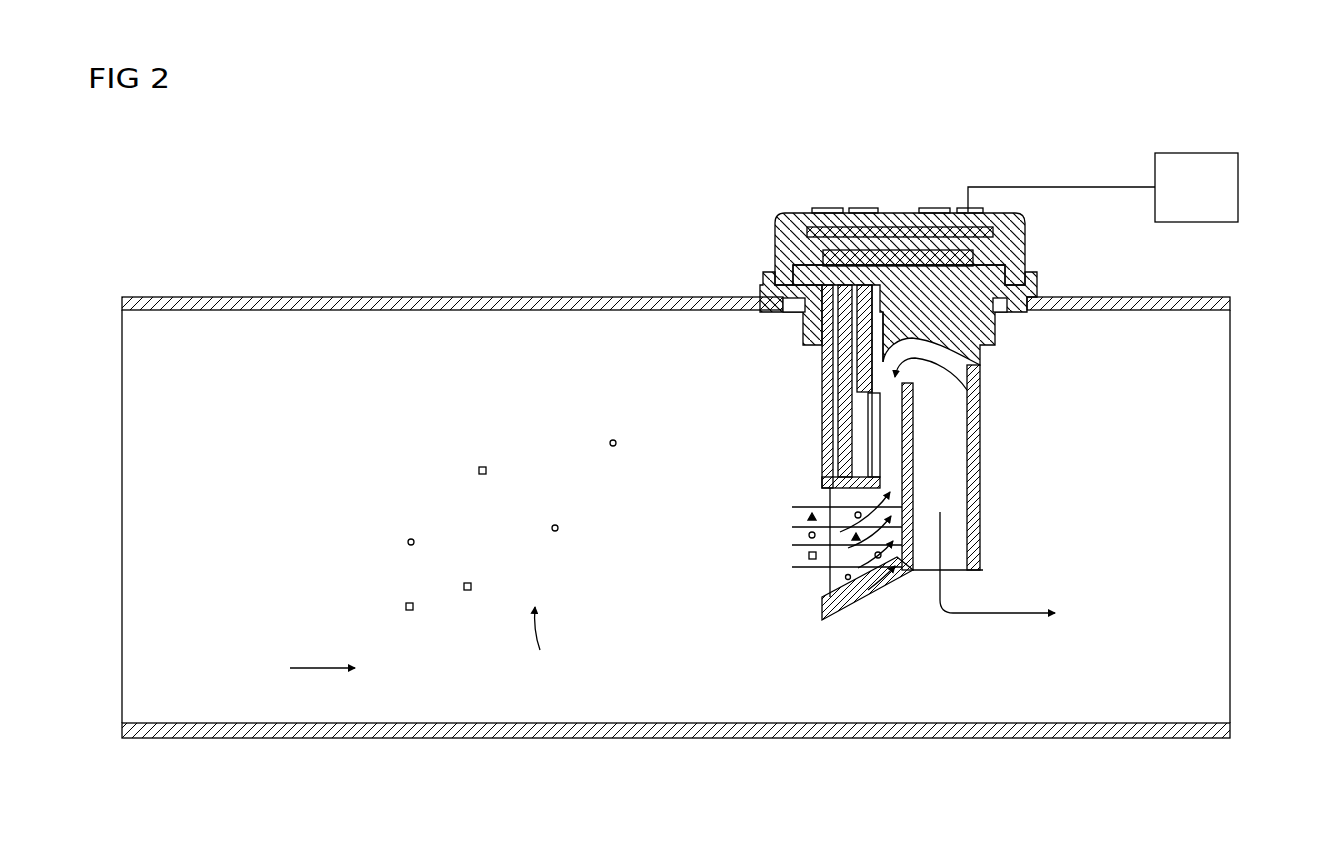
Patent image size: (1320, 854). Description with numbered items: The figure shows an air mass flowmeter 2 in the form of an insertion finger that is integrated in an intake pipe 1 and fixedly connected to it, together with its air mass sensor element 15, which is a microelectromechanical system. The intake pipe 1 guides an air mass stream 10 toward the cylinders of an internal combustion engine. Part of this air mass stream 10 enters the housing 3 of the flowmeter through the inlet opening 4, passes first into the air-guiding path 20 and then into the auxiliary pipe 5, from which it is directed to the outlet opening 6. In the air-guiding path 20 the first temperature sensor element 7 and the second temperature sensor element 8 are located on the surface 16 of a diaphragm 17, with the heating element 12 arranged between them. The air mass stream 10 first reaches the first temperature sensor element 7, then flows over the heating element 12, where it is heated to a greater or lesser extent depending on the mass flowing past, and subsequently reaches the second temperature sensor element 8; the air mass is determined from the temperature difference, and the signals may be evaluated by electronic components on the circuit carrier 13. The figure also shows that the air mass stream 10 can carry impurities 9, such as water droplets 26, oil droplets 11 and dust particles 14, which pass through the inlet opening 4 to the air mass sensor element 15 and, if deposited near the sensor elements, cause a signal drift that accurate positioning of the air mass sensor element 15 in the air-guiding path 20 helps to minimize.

The intake pipe 1 is at (395, 297).
The air mass flowmeter 2 is at (1034, 240).
The housing 3 is at (1035, 288).
The inlet opening 4 is at (787, 533).
The auxiliary pipe 5 is at (982, 545).
The outlet opening 6 is at (800, 521).
The first temperature sensor element 7 is at (915, 442).
The second temperature sensor element 8 is at (878, 407).
The impurities 9 is at (437, 482).
The air mass stream 10 is at (323, 665).
The oil droplets 11 is at (613, 440).
The heating element 12 is at (872, 428).
The circuit carrier 13 is at (862, 250).
The dust particles 14 is at (1238, 190).
The air mass sensor element 15 is at (905, 366).
The surface 16 is at (880, 458).
The diaphragm 17 is at (880, 411).
The air-guiding path 20 is at (880, 435).
The water droplets 26 is at (543, 642).